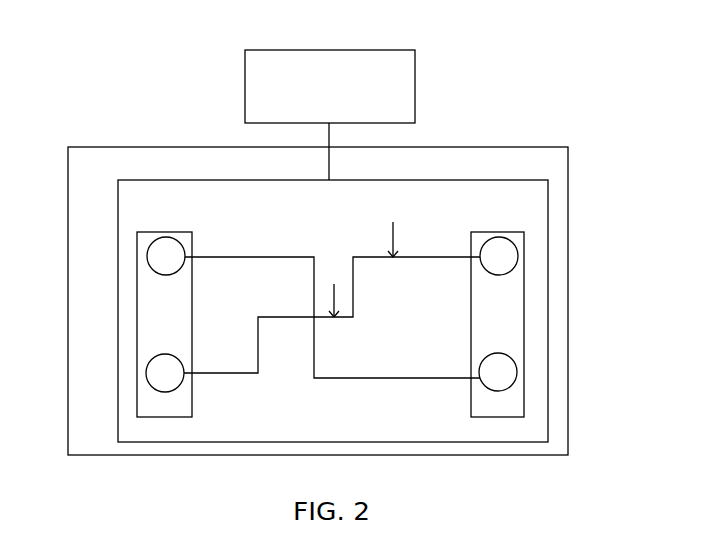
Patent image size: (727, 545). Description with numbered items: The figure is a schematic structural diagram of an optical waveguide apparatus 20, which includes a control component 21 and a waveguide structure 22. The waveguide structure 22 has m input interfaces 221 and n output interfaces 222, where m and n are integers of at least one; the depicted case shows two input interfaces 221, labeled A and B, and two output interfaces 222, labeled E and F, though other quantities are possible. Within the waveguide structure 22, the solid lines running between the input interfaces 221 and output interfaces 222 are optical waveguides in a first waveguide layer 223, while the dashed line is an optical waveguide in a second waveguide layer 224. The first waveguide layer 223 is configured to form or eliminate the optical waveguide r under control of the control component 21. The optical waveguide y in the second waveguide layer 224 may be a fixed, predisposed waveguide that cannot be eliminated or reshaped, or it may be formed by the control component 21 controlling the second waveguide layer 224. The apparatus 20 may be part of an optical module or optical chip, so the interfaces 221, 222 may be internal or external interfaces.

The optical waveguide apparatus 20 is at (110, 30).
The control component 21 is at (330, 115).
The waveguide structure 22 is at (155, 126).
The input interfaces 221 is at (138, 240).
The output interfaces 222 is at (525, 244).
The first waveguide layer 223 is at (333, 311).
The second waveguide layer 224 is at (318, 301).